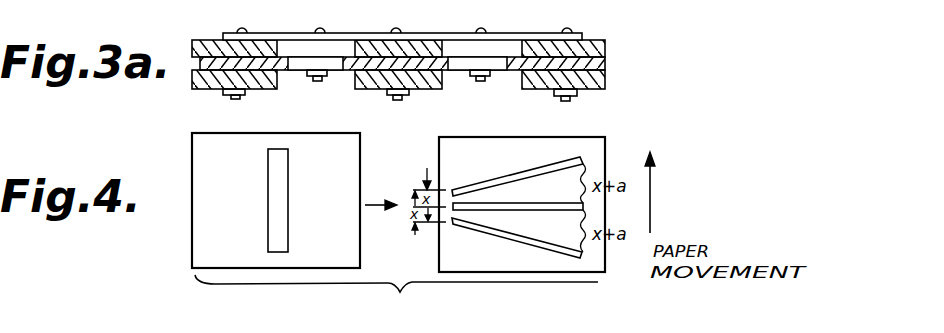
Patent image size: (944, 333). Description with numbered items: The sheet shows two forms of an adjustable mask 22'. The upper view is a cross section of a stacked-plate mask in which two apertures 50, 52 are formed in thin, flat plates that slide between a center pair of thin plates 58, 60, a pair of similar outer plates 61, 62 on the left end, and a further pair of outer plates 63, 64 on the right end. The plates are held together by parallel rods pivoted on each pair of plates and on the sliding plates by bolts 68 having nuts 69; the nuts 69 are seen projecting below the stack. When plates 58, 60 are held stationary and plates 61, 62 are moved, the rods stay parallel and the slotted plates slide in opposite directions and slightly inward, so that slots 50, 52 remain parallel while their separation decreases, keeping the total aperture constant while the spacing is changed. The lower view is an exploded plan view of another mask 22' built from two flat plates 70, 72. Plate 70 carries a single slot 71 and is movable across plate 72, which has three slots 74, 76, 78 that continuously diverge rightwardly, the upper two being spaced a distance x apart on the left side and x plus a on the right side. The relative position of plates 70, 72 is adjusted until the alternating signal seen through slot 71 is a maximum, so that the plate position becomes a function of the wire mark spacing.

In FIG. 3A, the outer plate 61 is at (198, 40).
In FIG. 3A, the outer plate 62 is at (193, 88).
In FIG. 3A, the outer plate 63 is at (607, 50).
In FIG. 3A, the outer plate 64 is at (608, 82).
In FIG. 3A, the center plate 58 is at (462, 19).
In FIG. 3A, the center plate 60 is at (398, 100).
In FIG. 3A, the aperture 50 is at (303, 71).
In FIG. 3A, the aperture 52 is at (462, 71).
In FIG. 3A, the bolt 68 is at (243, 31).
In FIG. 3A, the nut 69 is at (231, 95).
In FIG. 4, the flat plate 70 is at (338, 137).
In FIG. 4, the slot 71 is at (280, 236).
In FIG. 4, the flat plate 72 is at (533, 138).
In FIG. 4, the slot 74 is at (582, 164).
In FIG. 4, the slot 76 is at (583, 207).
In FIG. 4, the slot 78 is at (585, 253).
In FIG. 4, the adjustable mask 22' is at (396, 297).